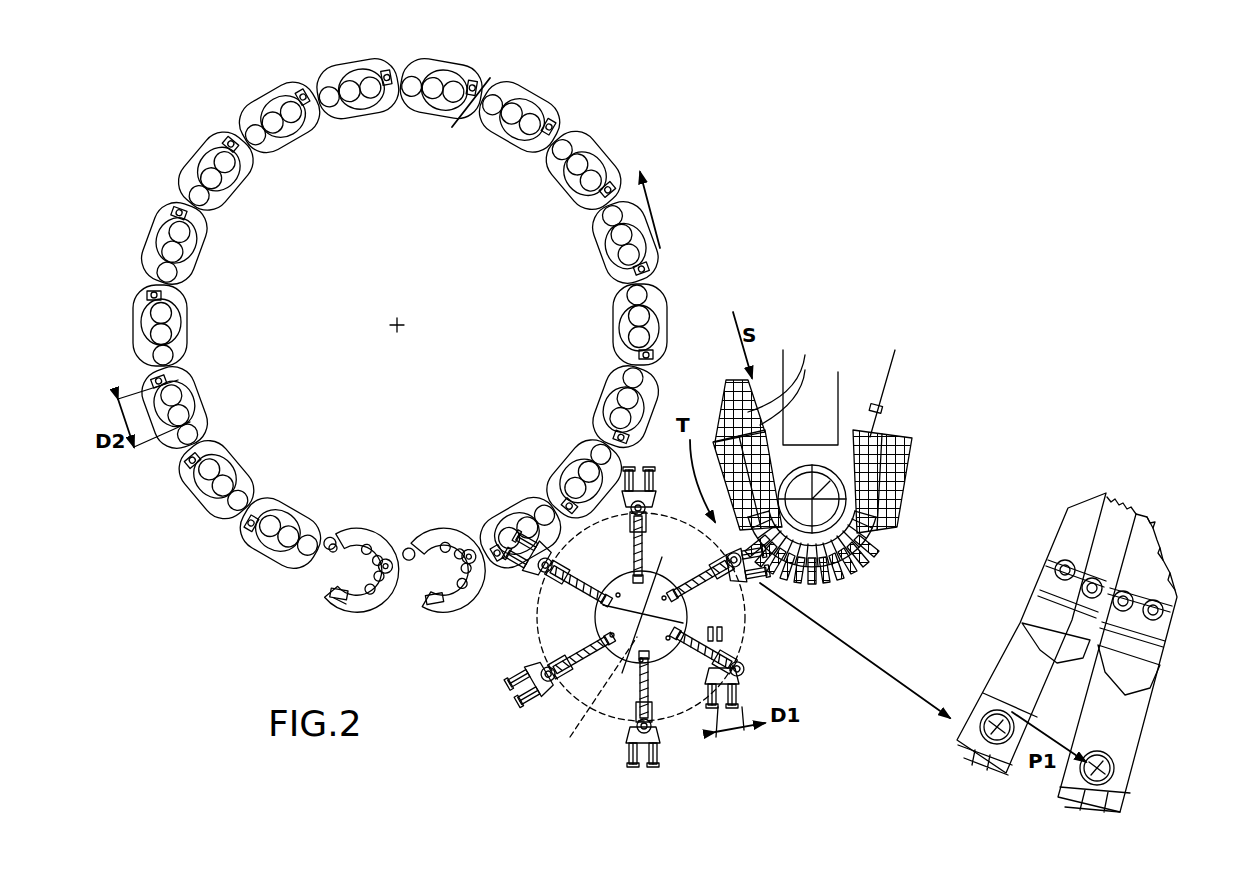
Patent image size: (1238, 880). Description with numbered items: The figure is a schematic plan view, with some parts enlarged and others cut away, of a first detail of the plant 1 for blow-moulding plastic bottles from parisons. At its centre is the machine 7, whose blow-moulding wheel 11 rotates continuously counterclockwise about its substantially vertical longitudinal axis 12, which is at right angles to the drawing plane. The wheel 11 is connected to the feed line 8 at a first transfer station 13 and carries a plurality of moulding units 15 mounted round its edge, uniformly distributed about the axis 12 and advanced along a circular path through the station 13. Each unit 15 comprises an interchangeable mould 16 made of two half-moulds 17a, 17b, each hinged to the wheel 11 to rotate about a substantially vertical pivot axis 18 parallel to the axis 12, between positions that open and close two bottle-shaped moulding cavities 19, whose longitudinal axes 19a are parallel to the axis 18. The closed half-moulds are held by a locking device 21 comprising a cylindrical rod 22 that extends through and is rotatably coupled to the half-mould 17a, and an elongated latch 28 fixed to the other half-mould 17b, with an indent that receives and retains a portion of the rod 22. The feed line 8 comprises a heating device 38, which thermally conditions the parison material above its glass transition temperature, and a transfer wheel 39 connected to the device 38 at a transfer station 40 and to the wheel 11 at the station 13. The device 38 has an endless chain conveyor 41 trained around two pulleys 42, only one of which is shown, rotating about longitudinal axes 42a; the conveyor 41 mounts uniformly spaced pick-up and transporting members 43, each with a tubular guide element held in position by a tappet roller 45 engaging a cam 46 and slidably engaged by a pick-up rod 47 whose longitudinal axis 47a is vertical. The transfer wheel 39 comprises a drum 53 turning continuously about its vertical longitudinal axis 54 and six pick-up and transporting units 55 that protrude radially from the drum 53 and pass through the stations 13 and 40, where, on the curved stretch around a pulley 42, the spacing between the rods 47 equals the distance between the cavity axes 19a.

The plant for blow-moulding plastic containers 1 is at (948, 245).
The machine 7 is at (612, 113).
The feed line 8 is at (550, 740).
The blow-moulding wheel 11 is at (490, 78).
The longitudinal axis 12 is at (395, 318).
The first transfer station 13 is at (517, 585).
The moulding units 15 is at (162, 182).
The interchangeable mould 16 is at (228, 552).
The half-mould 17a is at (283, 128).
The half-mould 17b is at (262, 78).
The pivot axis 18 is at (247, 118).
The moulding cavities 19 is at (537, 108).
The longitudinal axis 19a is at (578, 163).
The locking device 21 is at (327, 607).
The cylindrical rod 22 is at (333, 543).
The latch 28 is at (338, 610).
The heating device 38 is at (912, 393).
The transfer wheel 39 is at (552, 705).
The transfer station 40 is at (752, 597).
The endless chain conveyor 41 is at (733, 372).
The pulleys 42 is at (905, 470).
The longitudinal axes 42a is at (905, 430).
The pick-up and transporting members 43 is at (900, 523).
The tappet roller 45 is at (803, 368).
The cam 46 is at (755, 395).
The pick-up rod 47 is at (985, 740).
The longitudinal axis 47a is at (985, 715).
The drum 53 is at (673, 707).
The longitudinal axis 54 is at (597, 700).
The pick-up and transporting units 55 is at (503, 692).